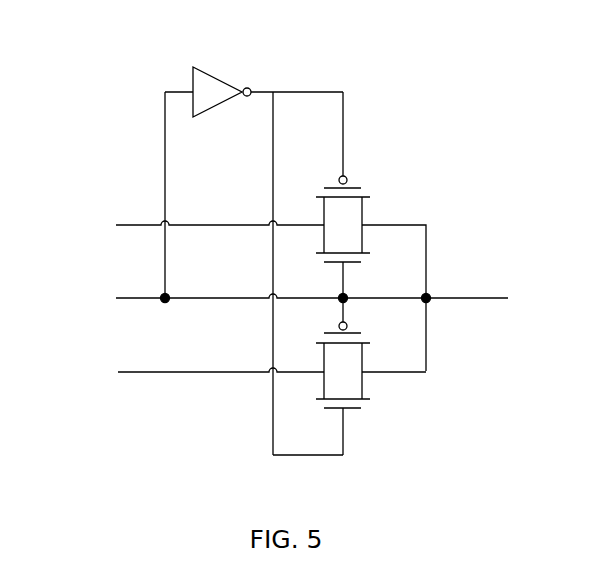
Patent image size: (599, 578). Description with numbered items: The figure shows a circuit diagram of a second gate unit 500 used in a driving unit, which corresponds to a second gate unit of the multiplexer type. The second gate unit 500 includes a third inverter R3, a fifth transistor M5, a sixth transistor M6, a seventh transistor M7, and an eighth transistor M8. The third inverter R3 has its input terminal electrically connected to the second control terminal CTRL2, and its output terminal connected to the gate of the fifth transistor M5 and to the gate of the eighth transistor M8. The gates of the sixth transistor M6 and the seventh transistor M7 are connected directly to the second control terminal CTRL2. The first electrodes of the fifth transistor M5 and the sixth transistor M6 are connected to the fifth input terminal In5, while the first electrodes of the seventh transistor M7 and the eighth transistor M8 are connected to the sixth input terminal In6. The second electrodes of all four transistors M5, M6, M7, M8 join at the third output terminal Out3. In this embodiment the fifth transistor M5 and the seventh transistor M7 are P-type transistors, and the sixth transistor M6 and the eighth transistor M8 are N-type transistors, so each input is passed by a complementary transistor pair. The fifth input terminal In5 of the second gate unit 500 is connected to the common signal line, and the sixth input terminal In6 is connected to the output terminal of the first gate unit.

The second gate unit 500 is at (531, 40).
The third inverter R3 is at (222, 104).
The fifth transistor M5 is at (358, 158).
The sixth transistor M6 is at (358, 261).
The seventh transistor M7 is at (358, 335).
The eighth transistor M8 is at (358, 413).
The fifth input terminal In5 is at (242, 293).
The sixth input terminal In6 is at (242, 373).
The second control terminal CTRL2 is at (191, 297).
The third output terminal Out3 is at (438, 288).